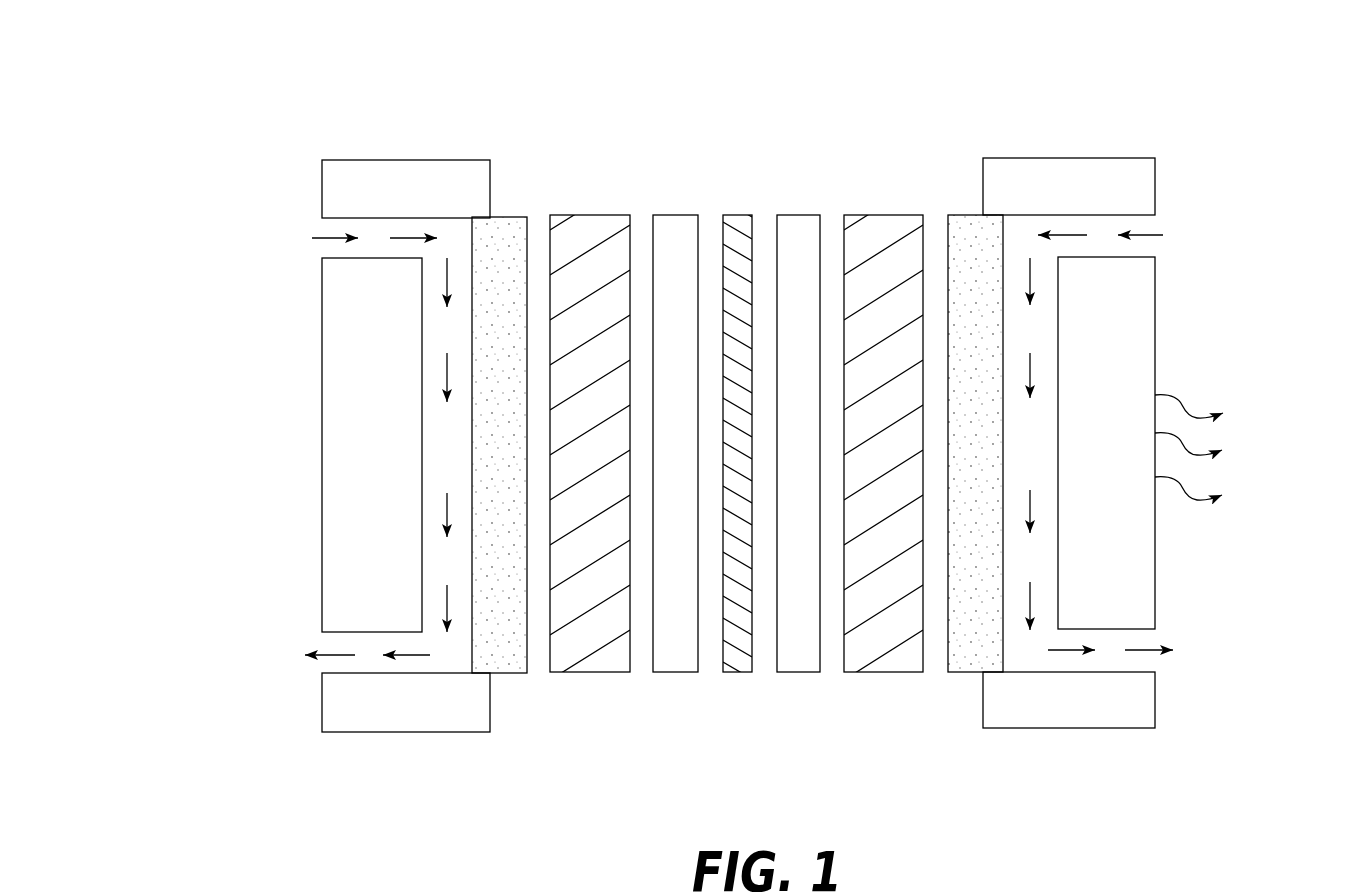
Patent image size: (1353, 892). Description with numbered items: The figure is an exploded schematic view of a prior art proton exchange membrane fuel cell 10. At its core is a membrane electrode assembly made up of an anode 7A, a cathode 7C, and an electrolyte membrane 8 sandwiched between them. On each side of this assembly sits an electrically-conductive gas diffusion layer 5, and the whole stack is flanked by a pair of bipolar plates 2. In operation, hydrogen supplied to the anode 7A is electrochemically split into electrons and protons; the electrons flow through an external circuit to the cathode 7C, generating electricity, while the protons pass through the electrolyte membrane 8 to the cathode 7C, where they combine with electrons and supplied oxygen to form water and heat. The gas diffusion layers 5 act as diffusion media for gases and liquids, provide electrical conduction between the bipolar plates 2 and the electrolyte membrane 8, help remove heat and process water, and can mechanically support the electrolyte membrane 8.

The PEM fuel cell 10 is at (1002, 108).
The bipolar plate 2 is at (383, 732).
The gas diffusion layer 5 is at (602, 672).
The anode 7A is at (683, 672).
The electrolyte membrane 8 is at (742, 672).
The cathode 7C is at (805, 672).